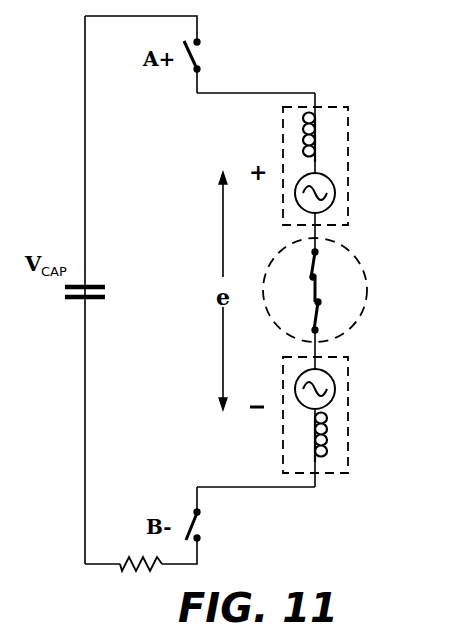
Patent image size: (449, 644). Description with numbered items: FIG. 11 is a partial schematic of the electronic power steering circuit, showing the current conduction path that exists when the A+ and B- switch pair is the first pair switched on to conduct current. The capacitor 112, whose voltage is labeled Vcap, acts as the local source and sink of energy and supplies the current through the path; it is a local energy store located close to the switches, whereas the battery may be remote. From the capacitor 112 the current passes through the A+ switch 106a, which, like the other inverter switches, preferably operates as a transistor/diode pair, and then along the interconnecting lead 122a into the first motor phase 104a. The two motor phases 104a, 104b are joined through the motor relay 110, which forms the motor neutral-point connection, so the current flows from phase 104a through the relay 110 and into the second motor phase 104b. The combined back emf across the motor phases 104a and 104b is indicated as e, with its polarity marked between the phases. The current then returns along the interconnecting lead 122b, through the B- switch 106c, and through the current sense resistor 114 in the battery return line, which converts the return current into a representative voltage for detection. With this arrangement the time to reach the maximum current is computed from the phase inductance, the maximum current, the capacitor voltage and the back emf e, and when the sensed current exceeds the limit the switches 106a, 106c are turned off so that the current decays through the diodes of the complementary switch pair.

The switch 106a is at (206, 53).
The interconnecting lead 122a is at (245, 96).
The motor phase 104a is at (349, 157).
The motor relay 110 is at (357, 256).
The motor phase 104b is at (349, 427).
The interconnecting lead 122b is at (239, 485).
The switch 106c is at (206, 529).
The current sense resistor 114 is at (133, 570).
The capacitor 112 is at (105, 297).